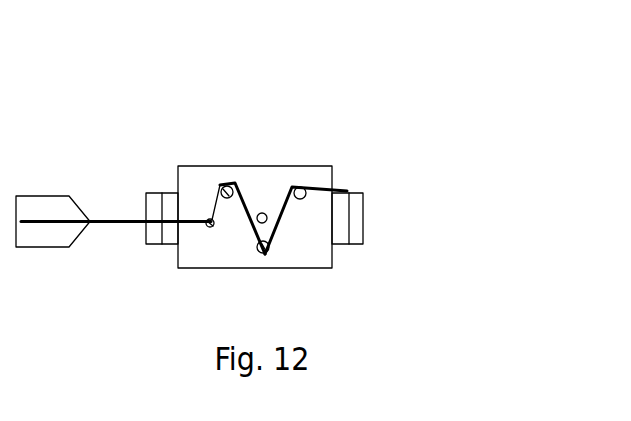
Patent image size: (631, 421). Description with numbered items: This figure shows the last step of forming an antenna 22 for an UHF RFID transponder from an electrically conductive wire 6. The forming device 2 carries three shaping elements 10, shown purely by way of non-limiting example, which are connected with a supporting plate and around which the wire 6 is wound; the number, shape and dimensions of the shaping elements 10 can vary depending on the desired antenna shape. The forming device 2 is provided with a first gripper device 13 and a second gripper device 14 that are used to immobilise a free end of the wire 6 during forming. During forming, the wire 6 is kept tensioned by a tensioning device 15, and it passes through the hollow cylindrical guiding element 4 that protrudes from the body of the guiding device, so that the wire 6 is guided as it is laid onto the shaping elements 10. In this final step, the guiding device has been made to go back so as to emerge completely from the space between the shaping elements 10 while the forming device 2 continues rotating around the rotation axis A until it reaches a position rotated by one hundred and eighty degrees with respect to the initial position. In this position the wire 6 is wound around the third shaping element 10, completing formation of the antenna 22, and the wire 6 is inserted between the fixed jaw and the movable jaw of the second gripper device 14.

The forming device 2 is at (305, 255).
The guiding element 4 is at (211, 228).
The wire 6 is at (122, 221).
The shaping element 10 is at (222, 187).
The first gripper device 13 is at (350, 221).
The second gripper device 14 is at (155, 212).
The tensioning device 15 is at (43, 237).
The antenna 22 is at (285, 217).
The rotation axis A is at (246, 208).